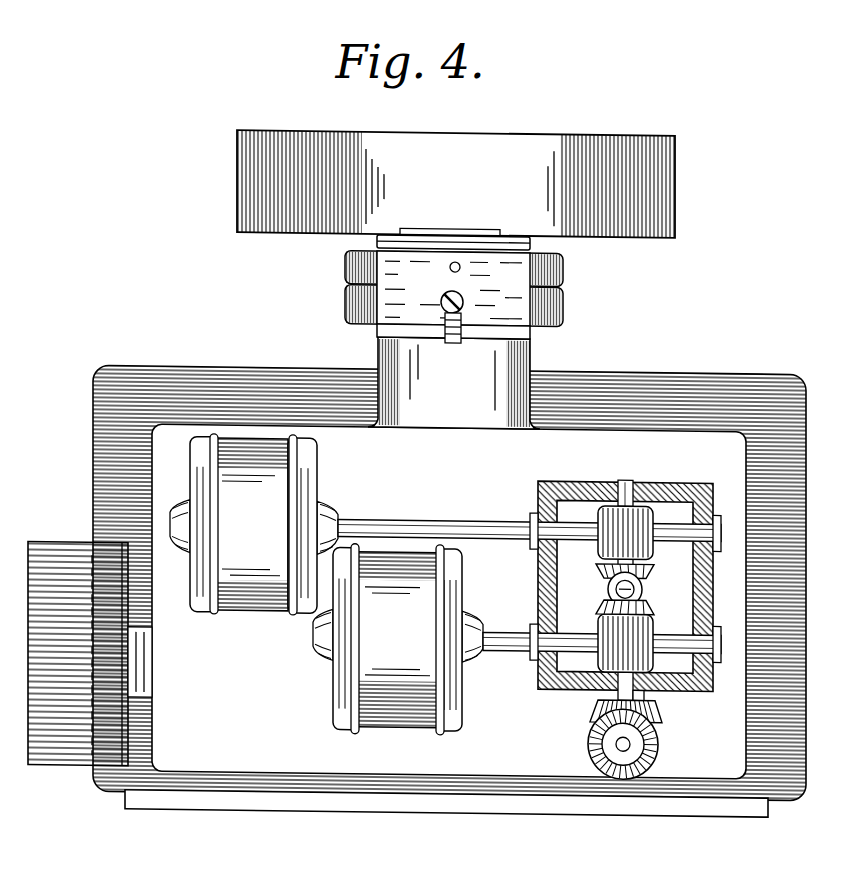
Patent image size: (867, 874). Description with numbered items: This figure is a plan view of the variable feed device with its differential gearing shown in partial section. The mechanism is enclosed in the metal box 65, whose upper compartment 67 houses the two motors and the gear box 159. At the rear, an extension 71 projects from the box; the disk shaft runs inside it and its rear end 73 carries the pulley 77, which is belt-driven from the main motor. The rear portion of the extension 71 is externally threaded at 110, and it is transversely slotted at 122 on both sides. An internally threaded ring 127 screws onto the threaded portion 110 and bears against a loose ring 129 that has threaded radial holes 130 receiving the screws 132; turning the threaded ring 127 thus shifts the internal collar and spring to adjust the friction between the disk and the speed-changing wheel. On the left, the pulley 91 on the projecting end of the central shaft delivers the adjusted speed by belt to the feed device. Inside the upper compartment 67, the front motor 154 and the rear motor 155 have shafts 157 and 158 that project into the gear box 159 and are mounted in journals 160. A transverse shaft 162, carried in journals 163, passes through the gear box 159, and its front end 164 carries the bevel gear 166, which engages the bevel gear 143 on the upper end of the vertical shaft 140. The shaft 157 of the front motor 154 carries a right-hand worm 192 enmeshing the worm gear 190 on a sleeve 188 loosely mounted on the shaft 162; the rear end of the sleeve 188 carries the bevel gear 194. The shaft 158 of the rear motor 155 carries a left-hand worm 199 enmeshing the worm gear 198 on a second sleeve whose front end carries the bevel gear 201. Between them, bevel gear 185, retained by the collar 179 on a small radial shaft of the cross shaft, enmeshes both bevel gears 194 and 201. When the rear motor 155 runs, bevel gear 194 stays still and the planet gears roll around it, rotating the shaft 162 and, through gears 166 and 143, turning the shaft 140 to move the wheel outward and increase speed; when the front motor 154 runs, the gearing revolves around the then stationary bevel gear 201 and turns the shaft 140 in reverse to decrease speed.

The metal box 65 is at (482, 812).
The upper compartment 67 is at (540, 577).
The extension 71 is at (532, 388).
The rear end of shaft 73 is at (453, 232).
The pulley 77 is at (484, 140).
The pulley 91 is at (62, 592).
The threaded portion 110 is at (532, 241).
The transverse slots 122 is at (447, 346).
The internally threaded ring 127 is at (565, 268).
The ring 129 is at (565, 312).
The threaded radial holes 130 is at (458, 310).
The screws 132 is at (453, 344).
The shaft 140 is at (620, 740).
The bevel gear 143 is at (659, 746).
The front motor 154 is at (395, 730).
The rear motor 155 is at (318, 470).
The motor shaft 157 is at (500, 632).
The motor shaft 158 is at (398, 520).
The gear box 159 is at (680, 482).
The journals 160 is at (538, 514).
The transverse shaft 162 is at (619, 479).
The journals 163 is at (635, 479).
The front end of shaft 164 is at (645, 694).
The bevel gear 166 is at (660, 712).
The collar 179 is at (612, 580).
The bevel gear 185 is at (644, 587).
The sleeve 188 is at (650, 610).
The worm gear 190 is at (655, 655).
The right-hand worm 192 is at (605, 630).
The bevel gear 194 is at (660, 606).
The worm gear 198 is at (650, 527).
The left-hand worm 199 is at (603, 545).
The bevel gear 201 is at (655, 571).